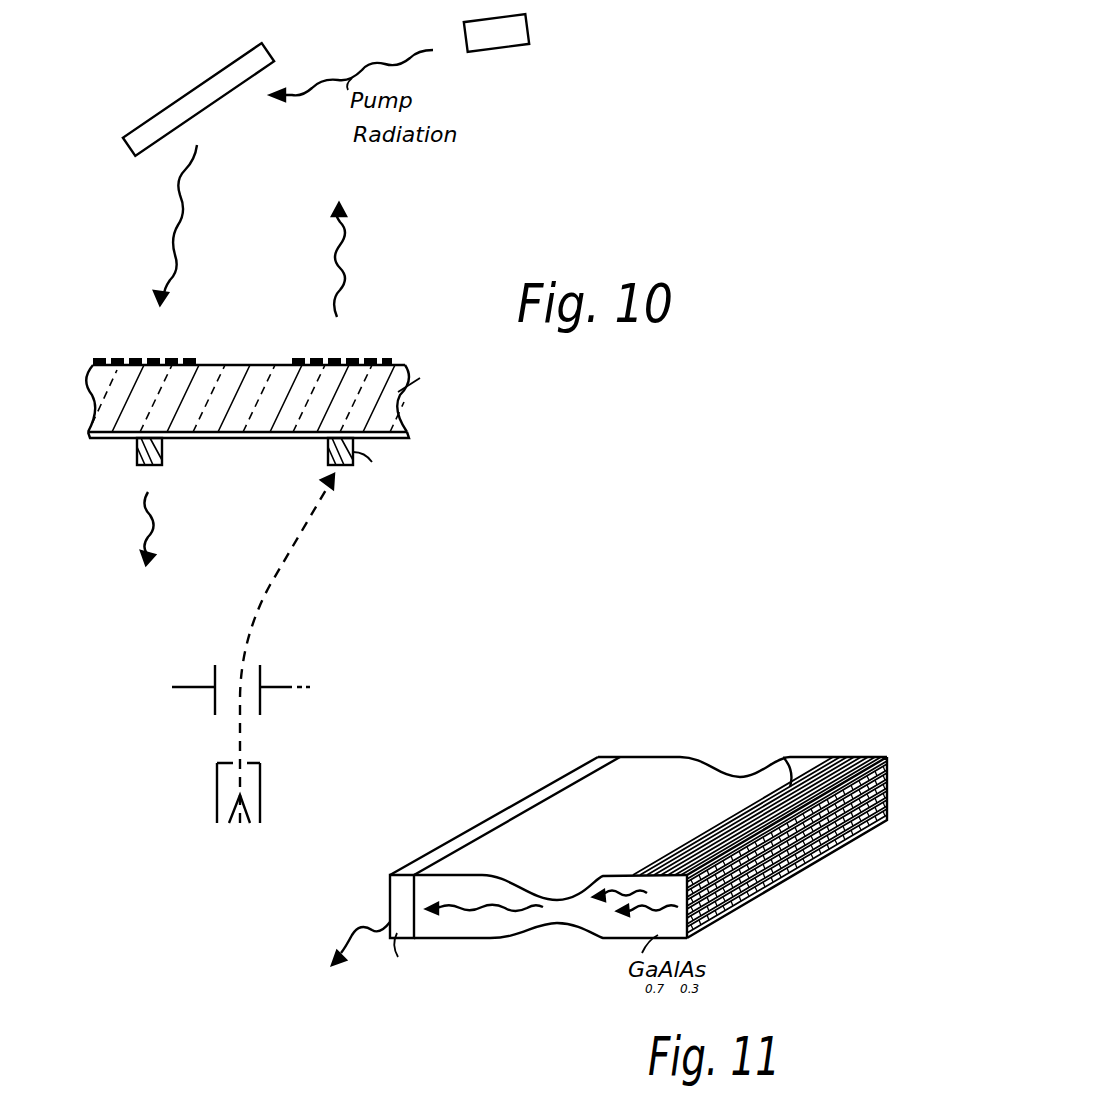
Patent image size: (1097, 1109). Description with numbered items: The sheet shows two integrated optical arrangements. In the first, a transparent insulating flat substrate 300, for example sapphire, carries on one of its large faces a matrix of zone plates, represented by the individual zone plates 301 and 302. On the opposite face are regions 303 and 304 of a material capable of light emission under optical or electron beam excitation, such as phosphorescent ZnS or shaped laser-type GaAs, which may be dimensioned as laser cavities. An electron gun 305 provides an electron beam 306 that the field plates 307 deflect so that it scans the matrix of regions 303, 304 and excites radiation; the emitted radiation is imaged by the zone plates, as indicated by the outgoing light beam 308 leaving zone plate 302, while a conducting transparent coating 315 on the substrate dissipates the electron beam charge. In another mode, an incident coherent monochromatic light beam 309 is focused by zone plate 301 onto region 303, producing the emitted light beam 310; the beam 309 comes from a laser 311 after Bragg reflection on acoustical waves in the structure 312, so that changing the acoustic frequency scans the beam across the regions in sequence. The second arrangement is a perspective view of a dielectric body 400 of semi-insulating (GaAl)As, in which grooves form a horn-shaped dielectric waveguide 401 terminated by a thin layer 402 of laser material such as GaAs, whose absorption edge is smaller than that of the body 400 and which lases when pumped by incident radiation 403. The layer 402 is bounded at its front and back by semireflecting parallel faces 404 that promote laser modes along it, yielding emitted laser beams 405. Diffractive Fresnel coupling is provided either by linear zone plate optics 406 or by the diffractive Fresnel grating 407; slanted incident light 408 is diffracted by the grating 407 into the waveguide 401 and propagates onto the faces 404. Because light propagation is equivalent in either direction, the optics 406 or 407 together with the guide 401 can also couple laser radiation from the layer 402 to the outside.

In FIG. 10, the transparent insulating flat substrate 300 is at (302, 398).
In FIG. 10, the zone plate 301 is at (133, 356).
In FIG. 10, the zone plate 302 is at (352, 360).
In FIG. 10, the region of light-emitting material 303 is at (137, 454).
In FIG. 10, the region of light-emitting material 304 is at (328, 454).
In FIG. 10, the electron gun 305 is at (261, 780).
In FIG. 10, the electron beam 306 is at (300, 527).
In FIG. 10, the field plates 307 is at (215, 668).
In FIG. 10, the outgoing light beam 308 is at (342, 268).
In FIG. 10, the incident coherent monochromatic light beam 309 is at (176, 238).
In FIG. 10, the emitted light beam 310 is at (155, 528).
In FIG. 10, the laser 311 is at (500, 42).
In FIG. 10, the acoustical wave structure 312 is at (198, 92).
In FIG. 10, the conducting transparent coating 315 is at (407, 435).
In FIG. 11, the dielectric body 400 is at (447, 885).
In FIG. 11, the horn-shaped dielectric waveguide 401 is at (543, 930).
In FIG. 11, the laser material layer 402 is at (440, 850).
In FIG. 11, the incident radiation 403 is at (456, 910).
In FIG. 11, the semireflecting parallel faces 404 is at (397, 905).
In FIG. 11, the emitted laser beams 405 is at (342, 943).
In FIG. 11, the linear zone plate optics 406 is at (745, 880).
In FIG. 11, the diffractive Fresnel grating 407 is at (831, 767).
In FIG. 11, the slanted incident light 408 is at (850, 755).